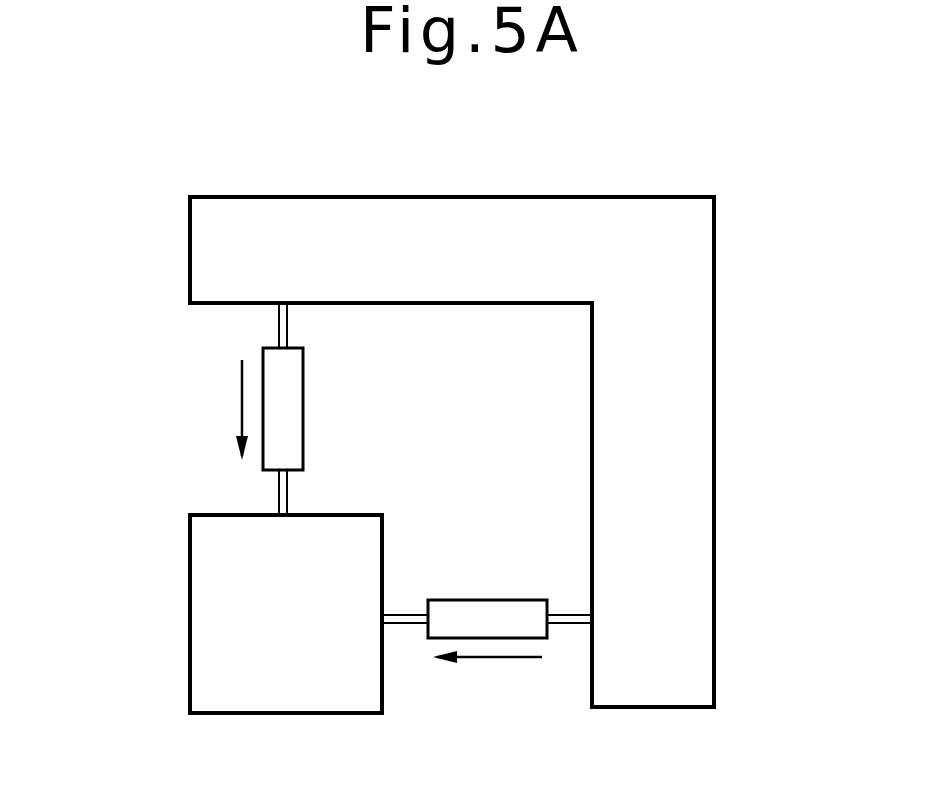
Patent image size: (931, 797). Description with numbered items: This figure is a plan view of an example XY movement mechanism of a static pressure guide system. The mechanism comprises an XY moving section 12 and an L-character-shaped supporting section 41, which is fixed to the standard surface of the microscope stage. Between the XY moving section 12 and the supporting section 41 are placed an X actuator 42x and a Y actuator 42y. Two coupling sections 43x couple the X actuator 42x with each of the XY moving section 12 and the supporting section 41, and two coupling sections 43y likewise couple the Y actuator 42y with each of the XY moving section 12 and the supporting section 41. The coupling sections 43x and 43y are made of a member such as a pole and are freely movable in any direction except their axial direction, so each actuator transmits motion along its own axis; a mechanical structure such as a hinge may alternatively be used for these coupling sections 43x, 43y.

The supporting section 41 is at (687, 293).
The XY moving section 12 is at (203, 600).
The Y actuator 42y is at (292, 407).
The coupling sections 43y is at (287, 318).
The X actuator 42x is at (478, 610).
The coupling sections 43x is at (408, 613).